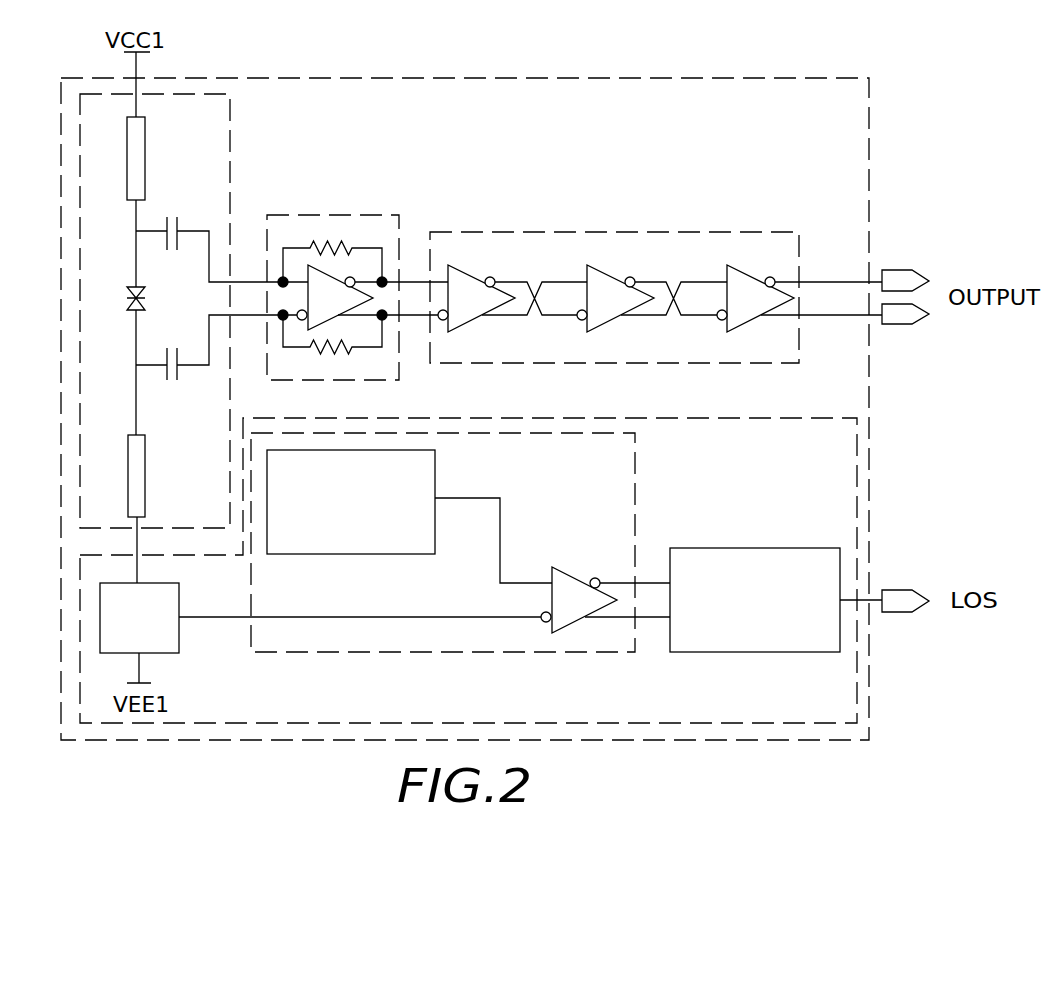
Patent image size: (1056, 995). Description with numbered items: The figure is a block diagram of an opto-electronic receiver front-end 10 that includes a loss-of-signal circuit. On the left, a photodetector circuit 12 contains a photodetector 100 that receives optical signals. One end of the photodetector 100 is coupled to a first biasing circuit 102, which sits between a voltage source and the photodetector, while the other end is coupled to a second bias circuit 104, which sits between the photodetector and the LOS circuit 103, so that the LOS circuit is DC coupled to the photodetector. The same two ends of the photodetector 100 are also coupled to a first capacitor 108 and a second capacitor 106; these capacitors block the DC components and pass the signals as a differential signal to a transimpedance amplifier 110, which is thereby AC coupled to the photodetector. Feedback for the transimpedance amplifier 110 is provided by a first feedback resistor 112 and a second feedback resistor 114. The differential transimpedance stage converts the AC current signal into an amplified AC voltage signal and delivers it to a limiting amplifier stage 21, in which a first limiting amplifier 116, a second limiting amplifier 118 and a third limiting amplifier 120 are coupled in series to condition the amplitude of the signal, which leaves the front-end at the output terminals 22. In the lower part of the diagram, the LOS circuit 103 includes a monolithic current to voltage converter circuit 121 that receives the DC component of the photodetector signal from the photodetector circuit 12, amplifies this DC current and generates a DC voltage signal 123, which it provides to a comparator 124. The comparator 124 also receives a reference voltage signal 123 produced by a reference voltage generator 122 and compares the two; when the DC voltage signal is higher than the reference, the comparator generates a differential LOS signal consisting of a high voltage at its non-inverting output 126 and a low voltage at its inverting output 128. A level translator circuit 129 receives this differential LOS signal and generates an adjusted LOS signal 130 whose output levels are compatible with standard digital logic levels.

The receiver circuit 10 is at (618, 78).
The photodetector circuit 12 is at (230, 155).
The limiting amplifier stage 21 is at (648, 363).
The output terminals 22 is at (905, 268).
The photodetector 100 is at (128, 287).
The first biasing circuit 102 is at (145, 150).
The LOS circuit 103 is at (724, 723).
The second bias circuit 104 is at (128, 450).
The second capacitor 106 is at (181, 380).
The first capacitor 108 is at (178, 222).
The transimpedance amplifier 110 is at (355, 278).
The first feedback resistor 112 is at (328, 245).
The second feedback resistor 114 is at (343, 352).
The first limiting amplifier 116 is at (492, 278).
The second limiting amplifier 118 is at (632, 278).
The third limiting amplifier 120 is at (772, 278).
The current to voltage converter circuit 121 is at (179, 653).
The reference voltage generator 122 is at (333, 555).
The DC voltage signal / reference voltage signal 123 is at (485, 497).
The comparator 124 is at (570, 568).
The non-inverting output 126 is at (645, 583).
The inverting output 128 is at (650, 618).
The level translator circuit 129 is at (738, 548).
The adjusted LOS signal 130 is at (895, 588).